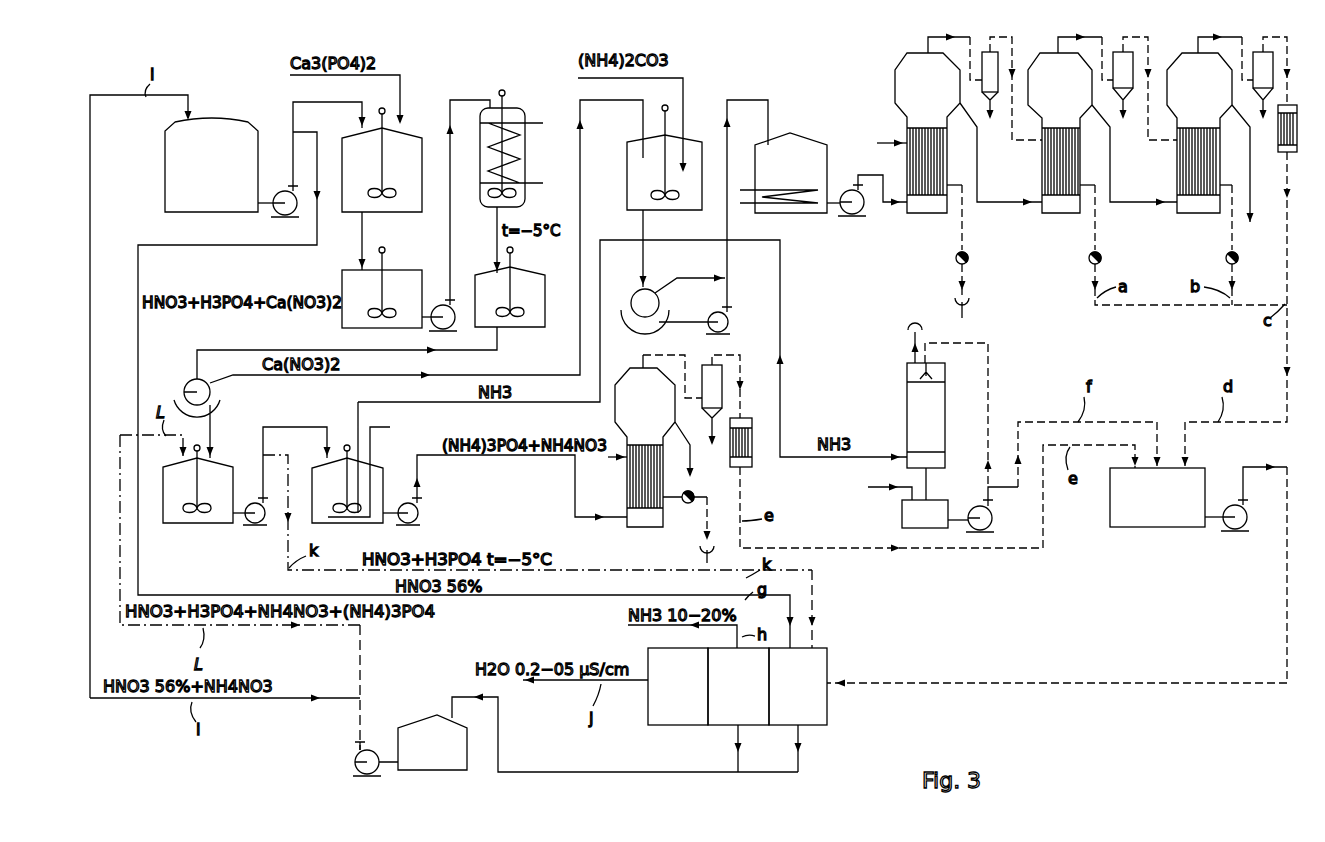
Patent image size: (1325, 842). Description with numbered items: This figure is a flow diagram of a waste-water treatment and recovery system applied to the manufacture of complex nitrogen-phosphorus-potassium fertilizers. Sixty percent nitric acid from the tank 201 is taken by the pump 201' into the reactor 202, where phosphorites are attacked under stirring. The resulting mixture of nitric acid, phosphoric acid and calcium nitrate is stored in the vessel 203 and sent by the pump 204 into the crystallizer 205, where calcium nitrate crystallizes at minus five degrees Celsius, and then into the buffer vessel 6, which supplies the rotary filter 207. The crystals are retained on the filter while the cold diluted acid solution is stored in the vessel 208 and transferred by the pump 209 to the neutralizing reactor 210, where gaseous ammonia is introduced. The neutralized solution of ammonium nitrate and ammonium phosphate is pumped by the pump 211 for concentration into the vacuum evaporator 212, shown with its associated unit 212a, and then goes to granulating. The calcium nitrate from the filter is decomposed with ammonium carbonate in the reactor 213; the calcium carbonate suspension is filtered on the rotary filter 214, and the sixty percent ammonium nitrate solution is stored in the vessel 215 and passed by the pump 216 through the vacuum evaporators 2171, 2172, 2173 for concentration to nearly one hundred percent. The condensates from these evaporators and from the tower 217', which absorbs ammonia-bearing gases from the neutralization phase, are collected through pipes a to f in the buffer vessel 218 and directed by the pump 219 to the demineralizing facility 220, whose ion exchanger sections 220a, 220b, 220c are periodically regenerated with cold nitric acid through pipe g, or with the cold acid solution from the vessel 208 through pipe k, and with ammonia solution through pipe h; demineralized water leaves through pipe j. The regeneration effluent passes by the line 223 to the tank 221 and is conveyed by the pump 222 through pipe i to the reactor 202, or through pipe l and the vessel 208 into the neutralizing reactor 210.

The nitric acid tank 201 is at (215, 152).
The pump 201' is at (309, 171).
The reactor 202 is at (410, 147).
The vessel 203 is at (408, 278).
The pump 204 is at (455, 330).
The crystallizer 205 is at (522, 113).
The buffer vessel 6 is at (537, 288).
The rotary filter 207 is at (186, 382).
The vessel 208 is at (220, 473).
The pump 209 is at (260, 524).
The neutralizing reactor 210 is at (375, 476).
The pump 211 is at (505, 490).
The vacuum evaporator 212 is at (634, 522).
The condenser 212a is at (753, 464).
The reactor 213 is at (632, 164).
The rotary filter 214 is at (636, 298).
The vessel 215 is at (812, 141).
The pump 216 is at (862, 214).
The vacuum evaporator 2171 is at (908, 66).
The vacuum evaporator 2172 is at (1044, 66).
The vacuum evaporator 2173 is at (1181, 63).
The tower 217' is at (925, 427).
The buffer vessel 218 is at (1165, 528).
The pump 219 is at (1238, 530).
The demineralizing facility 220 is at (722, 726).
The cation exchange compartment 220a is at (818, 710).
The anion exchange compartment 220b is at (760, 720).
The mixed bed compartment 220c is at (648, 718).
The tank 221 is at (421, 727).
The pump 222 is at (355, 763).
The effluent line 223 is at (525, 776).